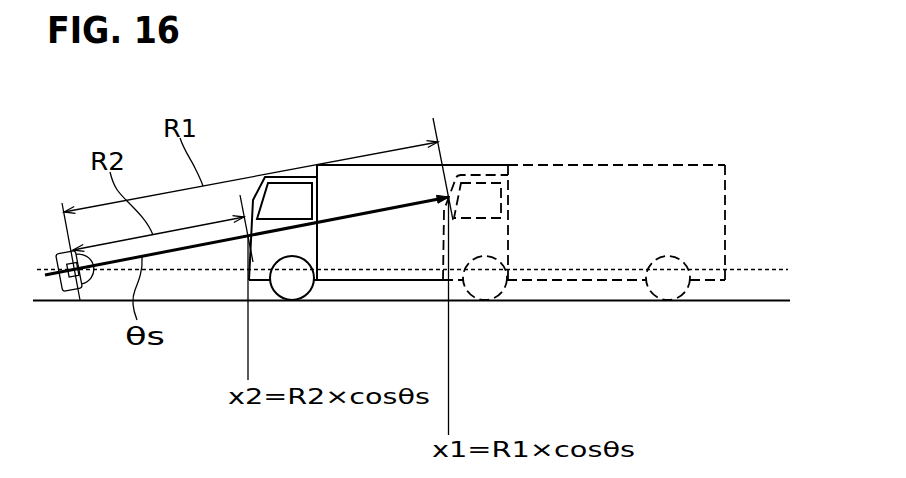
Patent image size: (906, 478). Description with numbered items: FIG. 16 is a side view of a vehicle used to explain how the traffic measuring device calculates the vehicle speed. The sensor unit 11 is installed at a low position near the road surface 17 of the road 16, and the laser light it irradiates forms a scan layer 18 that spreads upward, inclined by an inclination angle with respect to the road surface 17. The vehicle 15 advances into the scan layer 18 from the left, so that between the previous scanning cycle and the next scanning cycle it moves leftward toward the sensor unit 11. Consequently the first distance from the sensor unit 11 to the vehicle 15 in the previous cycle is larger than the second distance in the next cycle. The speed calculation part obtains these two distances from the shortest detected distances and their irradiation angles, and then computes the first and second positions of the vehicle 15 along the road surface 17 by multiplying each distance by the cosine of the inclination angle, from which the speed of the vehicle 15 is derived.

The sensor unit 11 is at (62, 252).
The vehicle 15 is at (455, 165).
The road 16 is at (373, 300).
The road surface 17 is at (755, 300).
The scan layer 18 is at (372, 211).